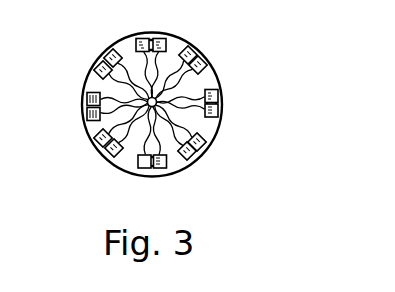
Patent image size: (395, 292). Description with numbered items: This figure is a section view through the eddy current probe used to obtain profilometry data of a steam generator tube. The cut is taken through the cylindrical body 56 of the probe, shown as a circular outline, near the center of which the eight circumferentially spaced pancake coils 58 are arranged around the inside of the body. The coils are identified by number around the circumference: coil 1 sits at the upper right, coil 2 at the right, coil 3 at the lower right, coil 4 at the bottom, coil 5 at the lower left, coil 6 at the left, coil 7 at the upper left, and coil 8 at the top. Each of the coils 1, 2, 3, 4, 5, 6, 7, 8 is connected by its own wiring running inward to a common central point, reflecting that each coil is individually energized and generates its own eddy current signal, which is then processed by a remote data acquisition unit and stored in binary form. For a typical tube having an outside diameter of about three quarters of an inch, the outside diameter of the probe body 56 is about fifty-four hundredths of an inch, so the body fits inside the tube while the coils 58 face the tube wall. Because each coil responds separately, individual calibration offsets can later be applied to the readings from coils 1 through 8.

The coil number one 1 is at (186, 69).
The coil number two 2 is at (199, 102).
The coil number three 3 is at (189, 137).
The coil number four 4 is at (152, 154).
The coil number five 5 is at (115, 140).
The coil number six 6 is at (104, 105).
The coil number seven 7 is at (113, 68).
The coil number eight 8 is at (151, 49).
The cylindrical body 56 is at (221, 79).
The pancake coils 58 is at (209, 148).